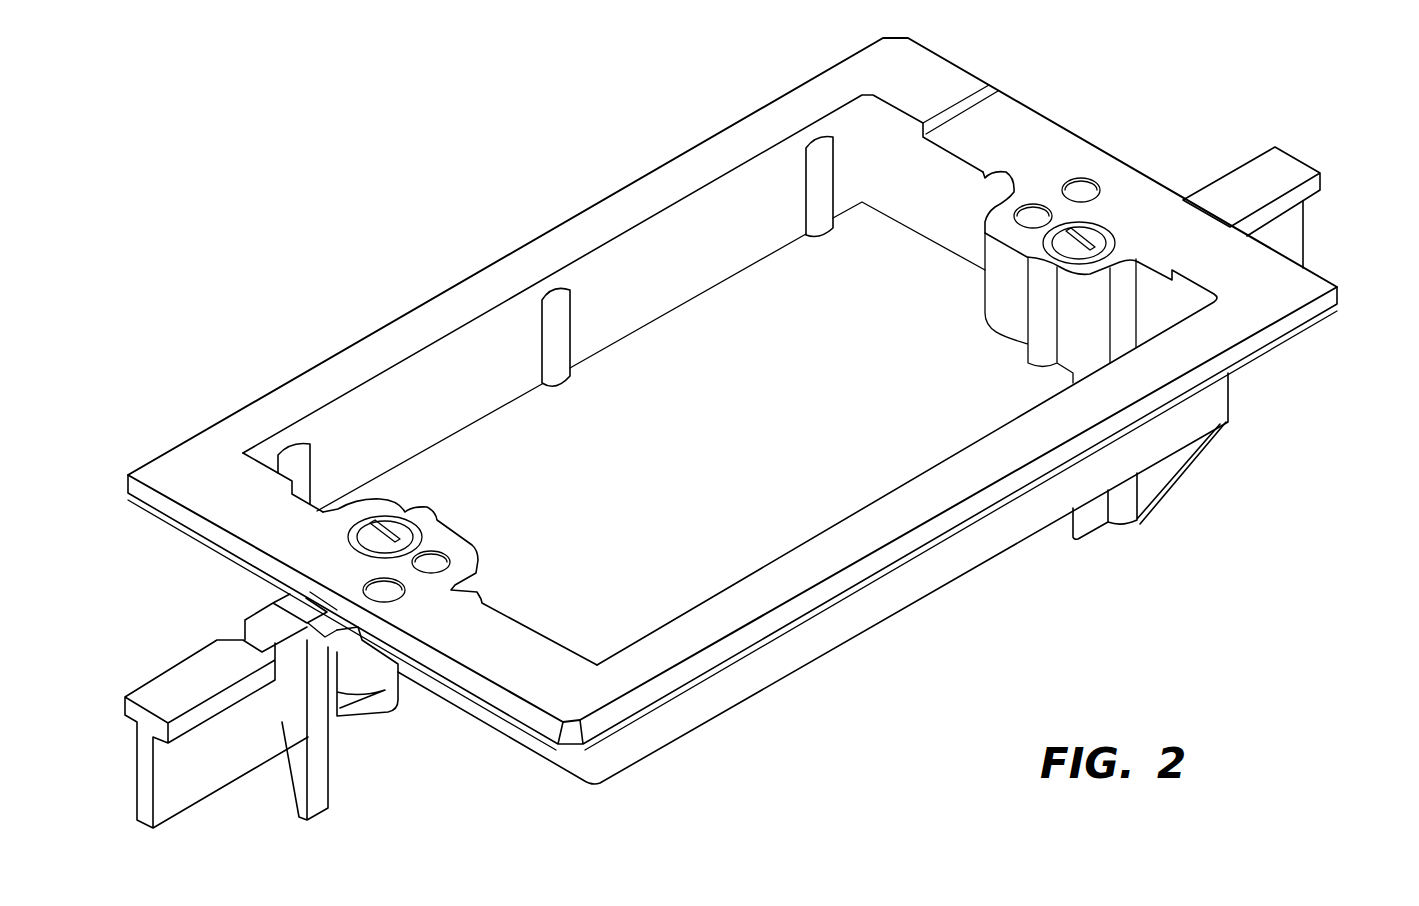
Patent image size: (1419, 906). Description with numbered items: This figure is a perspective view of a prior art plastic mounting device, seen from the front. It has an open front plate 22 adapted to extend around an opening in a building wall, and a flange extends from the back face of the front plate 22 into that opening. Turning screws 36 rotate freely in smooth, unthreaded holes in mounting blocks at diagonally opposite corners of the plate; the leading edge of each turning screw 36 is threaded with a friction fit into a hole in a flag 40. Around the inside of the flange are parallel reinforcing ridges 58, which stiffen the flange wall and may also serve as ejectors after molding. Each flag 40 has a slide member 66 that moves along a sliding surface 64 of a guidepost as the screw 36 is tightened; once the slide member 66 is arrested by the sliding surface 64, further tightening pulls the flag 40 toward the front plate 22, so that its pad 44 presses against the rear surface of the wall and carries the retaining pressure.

The open front plate 22 is at (912, 80).
The turning screw 36 is at (391, 528).
The flag 40 is at (1307, 233).
The pad 44 is at (1286, 190).
The reinforcing ridge 58 is at (816, 187).
The sliding surface 64 is at (290, 601).
The slide member 66 is at (245, 618).